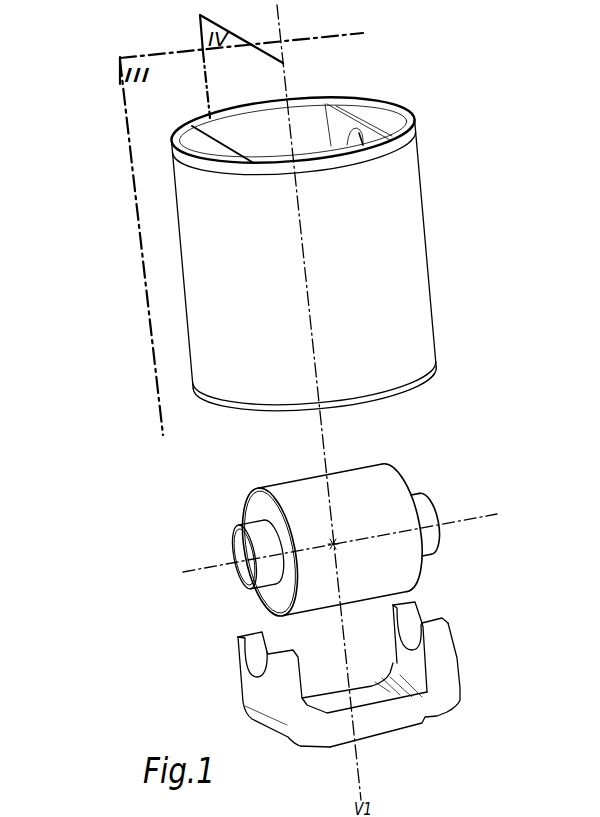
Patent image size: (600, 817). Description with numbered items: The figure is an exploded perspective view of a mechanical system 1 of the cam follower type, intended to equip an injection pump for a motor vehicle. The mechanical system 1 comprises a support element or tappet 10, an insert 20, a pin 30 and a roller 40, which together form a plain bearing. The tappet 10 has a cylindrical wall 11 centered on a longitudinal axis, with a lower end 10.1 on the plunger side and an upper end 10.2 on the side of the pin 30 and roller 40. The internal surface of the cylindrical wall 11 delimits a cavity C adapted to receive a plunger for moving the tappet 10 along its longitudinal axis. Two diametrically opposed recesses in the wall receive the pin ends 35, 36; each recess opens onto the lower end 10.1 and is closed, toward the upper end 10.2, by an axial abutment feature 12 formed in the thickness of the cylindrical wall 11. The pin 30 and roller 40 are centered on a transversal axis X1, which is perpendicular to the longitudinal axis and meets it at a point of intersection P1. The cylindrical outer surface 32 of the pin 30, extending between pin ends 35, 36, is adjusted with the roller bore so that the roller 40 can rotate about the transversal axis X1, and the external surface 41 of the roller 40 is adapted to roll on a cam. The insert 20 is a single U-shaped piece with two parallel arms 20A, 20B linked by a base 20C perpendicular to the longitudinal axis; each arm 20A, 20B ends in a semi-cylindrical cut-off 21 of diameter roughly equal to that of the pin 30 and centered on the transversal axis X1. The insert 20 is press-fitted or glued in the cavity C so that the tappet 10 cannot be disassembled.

The mechanical system 1 is at (116, 187).
The tappet 10 is at (359, 427).
The lower end 10.1 is at (454, 406).
The upper end 10.2 is at (267, 104).
The cylindrical wall 11 is at (388, 247).
The axial abutment feature 12 is at (186, 140).
The insert 20 is at (370, 676).
The first arm 20A is at (258, 692).
The second arm 20B is at (443, 657).
The base 20C is at (386, 724).
The semi-cylindrical cut-off 21 is at (238, 654).
The pin 30 is at (359, 521).
The cylindrical outer surface 32 is at (256, 526).
The pin end 35 is at (242, 543).
The pin end 36 is at (433, 517).
The roller 40 is at (343, 480).
The external surface 41 is at (303, 490).
The cavity C is at (303, 125).
The transversal axis X1 is at (340, 543).
The point of intersection P1 is at (337, 546).